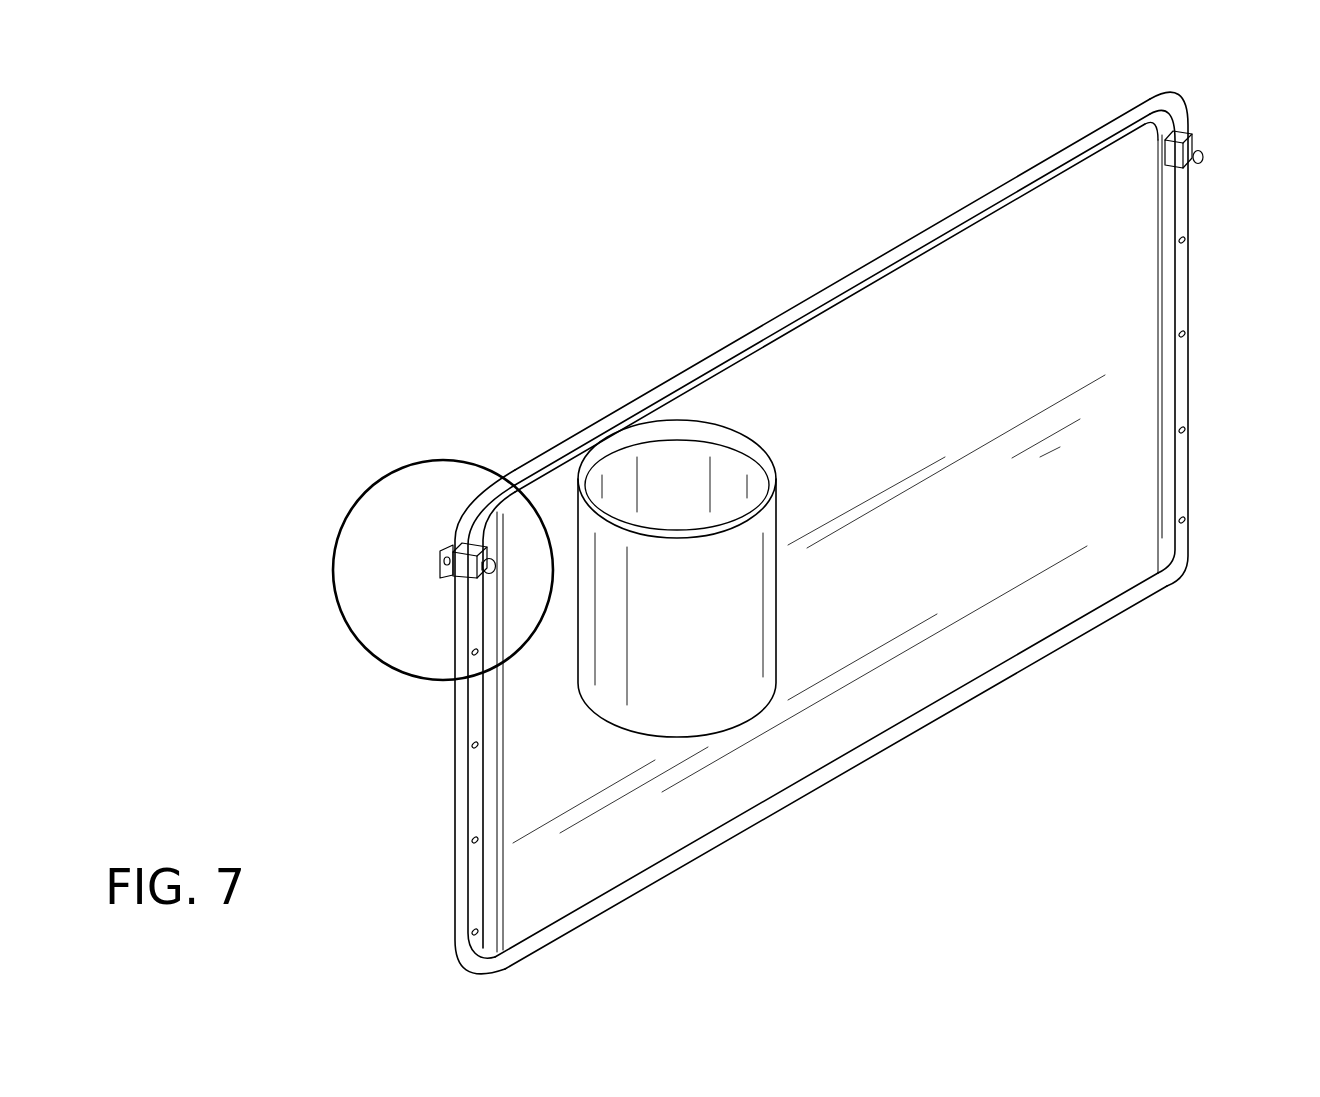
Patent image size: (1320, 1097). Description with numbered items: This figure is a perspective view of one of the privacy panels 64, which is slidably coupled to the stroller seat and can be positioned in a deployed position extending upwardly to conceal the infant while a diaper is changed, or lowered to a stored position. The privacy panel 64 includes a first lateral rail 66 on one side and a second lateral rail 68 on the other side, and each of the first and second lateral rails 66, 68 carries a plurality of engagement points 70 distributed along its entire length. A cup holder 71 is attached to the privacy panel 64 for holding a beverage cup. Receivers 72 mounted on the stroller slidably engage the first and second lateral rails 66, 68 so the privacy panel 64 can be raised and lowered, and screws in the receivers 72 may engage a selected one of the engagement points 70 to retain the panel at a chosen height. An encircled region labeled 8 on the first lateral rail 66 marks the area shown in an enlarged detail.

The detail view circle (FIG. 8) 8 is at (333, 566).
The privacy panel 64 is at (918, 690).
The first lateral rail 66 is at (455, 782).
The second lateral rail 68 is at (1185, 386).
The engagement points 70 is at (473, 840).
The cup holder 71 is at (737, 435).
The receivers 72 is at (483, 542).